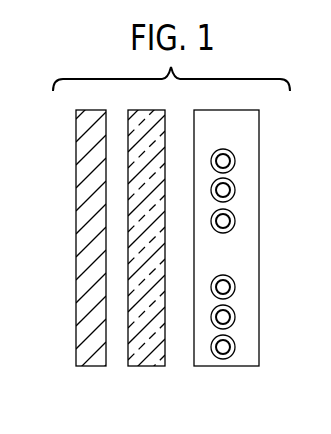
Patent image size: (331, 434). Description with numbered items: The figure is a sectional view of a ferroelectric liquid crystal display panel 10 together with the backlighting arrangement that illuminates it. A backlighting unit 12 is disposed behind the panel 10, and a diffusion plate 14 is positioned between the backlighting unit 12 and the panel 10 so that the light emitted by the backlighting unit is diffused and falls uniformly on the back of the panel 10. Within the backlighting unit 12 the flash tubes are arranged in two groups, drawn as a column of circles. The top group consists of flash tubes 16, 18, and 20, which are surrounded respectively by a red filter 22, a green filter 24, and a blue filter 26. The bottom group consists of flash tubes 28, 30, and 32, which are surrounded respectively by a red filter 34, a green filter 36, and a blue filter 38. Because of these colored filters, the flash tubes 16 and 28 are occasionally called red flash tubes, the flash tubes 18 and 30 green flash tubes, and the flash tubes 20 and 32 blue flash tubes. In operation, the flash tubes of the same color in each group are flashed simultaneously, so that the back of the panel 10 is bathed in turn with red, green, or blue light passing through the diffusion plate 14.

The ferroelectric liquid crystal display panel 10 is at (76, 290).
The backlighting unit 12 is at (230, 366).
The diffusion plate 14 is at (165, 366).
The flash tube 16 is at (234, 219).
The flash tube 18 is at (234, 189).
The flash tube 20 is at (233, 164).
The red filter 22 is at (232, 229).
The green filter 24 is at (234, 196).
The blue filter 26 is at (214, 153).
The flash tube 28 is at (225, 358).
The flash tube 30 is at (234, 321).
The flash tube 32 is at (221, 278).
The red filter 34 is at (234, 348).
The green filter 36 is at (234, 313).
The blue filter 38 is at (234, 290).